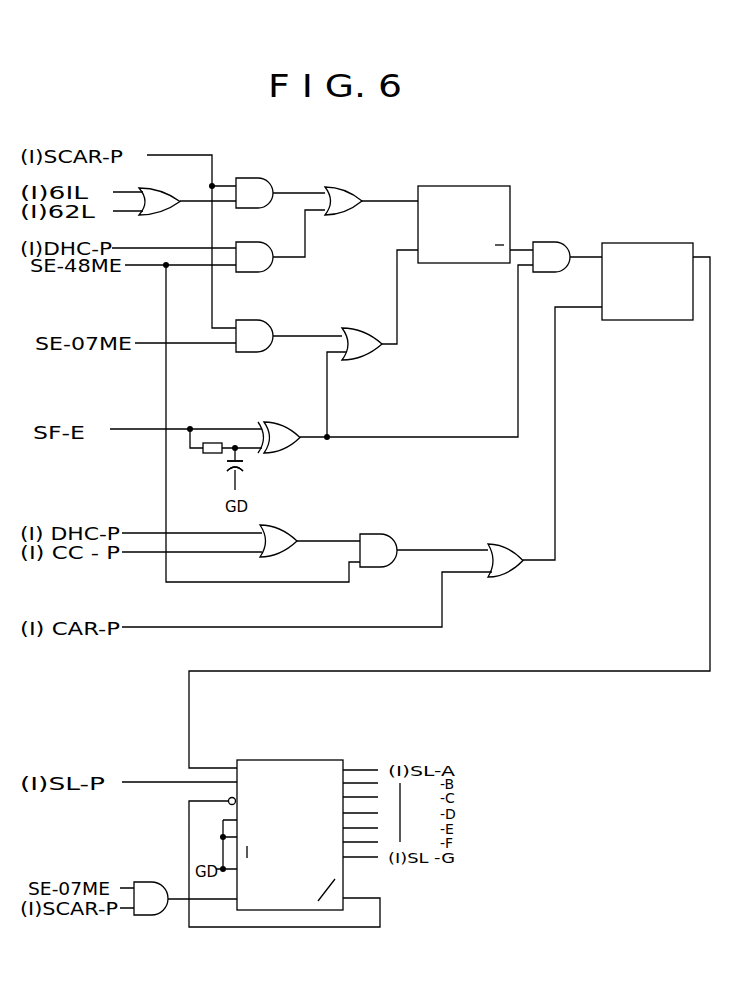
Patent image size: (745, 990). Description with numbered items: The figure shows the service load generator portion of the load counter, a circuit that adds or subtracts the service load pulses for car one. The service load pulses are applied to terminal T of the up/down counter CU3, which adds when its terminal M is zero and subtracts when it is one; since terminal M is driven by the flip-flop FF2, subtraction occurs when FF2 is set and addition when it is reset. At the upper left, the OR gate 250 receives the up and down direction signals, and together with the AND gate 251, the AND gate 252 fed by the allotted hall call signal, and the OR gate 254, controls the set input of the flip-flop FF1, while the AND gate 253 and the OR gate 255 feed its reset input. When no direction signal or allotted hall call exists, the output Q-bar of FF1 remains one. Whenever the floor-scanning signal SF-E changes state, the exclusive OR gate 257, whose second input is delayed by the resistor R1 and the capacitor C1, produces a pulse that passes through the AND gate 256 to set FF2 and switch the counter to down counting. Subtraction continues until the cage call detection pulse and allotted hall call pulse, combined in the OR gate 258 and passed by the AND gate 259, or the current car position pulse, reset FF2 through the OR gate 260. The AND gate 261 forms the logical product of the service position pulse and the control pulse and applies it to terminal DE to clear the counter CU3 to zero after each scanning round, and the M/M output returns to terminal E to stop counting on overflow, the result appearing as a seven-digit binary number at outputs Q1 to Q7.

The OR gate 250 is at (166, 188).
The OR gate 251 is at (273, 179).
The AND gate 252 is at (266, 243).
The AND gate 253 is at (272, 313).
The OR gate 254 is at (358, 188).
The OR gate 255 is at (360, 328).
The AND gate 256 is at (540, 243).
The E.OR gate 257 is at (283, 414).
The OR gate 258 is at (298, 522).
The AND gate 259 is at (400, 530).
The OR gate 260 is at (511, 535).
The AND gate 261 is at (146, 882).
The flip-flop FF1 is at (470, 186).
The flip-flop FF2 is at (645, 243).
The up/down counter CU3 is at (280, 760).
The resistor R1 is at (214, 455).
The capacitor C1 is at (246, 466).